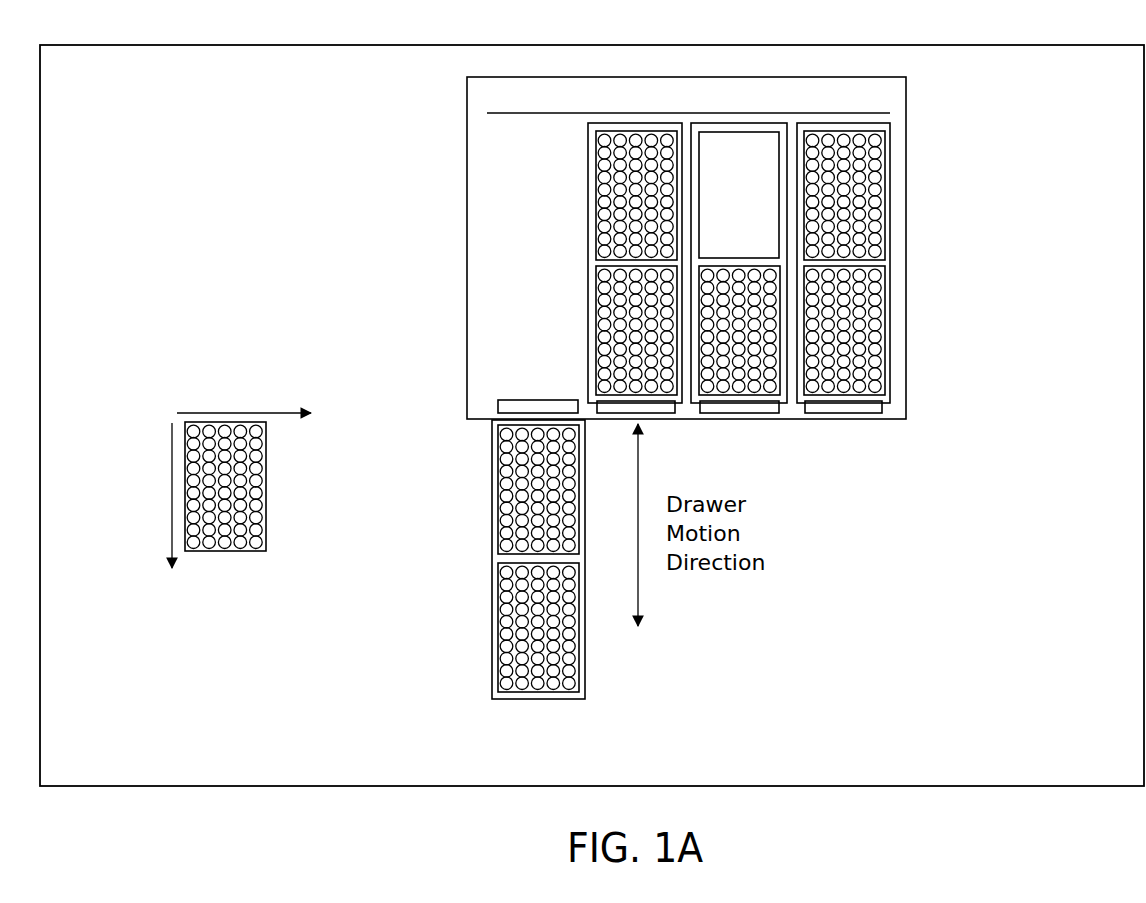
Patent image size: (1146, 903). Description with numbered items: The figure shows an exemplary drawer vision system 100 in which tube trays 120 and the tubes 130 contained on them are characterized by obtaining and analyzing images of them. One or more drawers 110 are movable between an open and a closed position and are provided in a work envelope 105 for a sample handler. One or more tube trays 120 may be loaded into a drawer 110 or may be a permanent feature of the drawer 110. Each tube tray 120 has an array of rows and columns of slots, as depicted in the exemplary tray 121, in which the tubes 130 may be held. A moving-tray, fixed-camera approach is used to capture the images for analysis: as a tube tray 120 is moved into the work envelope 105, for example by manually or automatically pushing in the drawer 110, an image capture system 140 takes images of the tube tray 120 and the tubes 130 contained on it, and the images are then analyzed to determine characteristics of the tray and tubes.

The drawer vision system 100 is at (108, 28).
The work envelope 105 is at (906, 95).
The drawer 110 is at (890, 363).
The tube tray 120 is at (872, 288).
The exemplary tray 121 is at (186, 485).
The tube 130 is at (569, 659).
The image capture system 140 is at (750, 413).